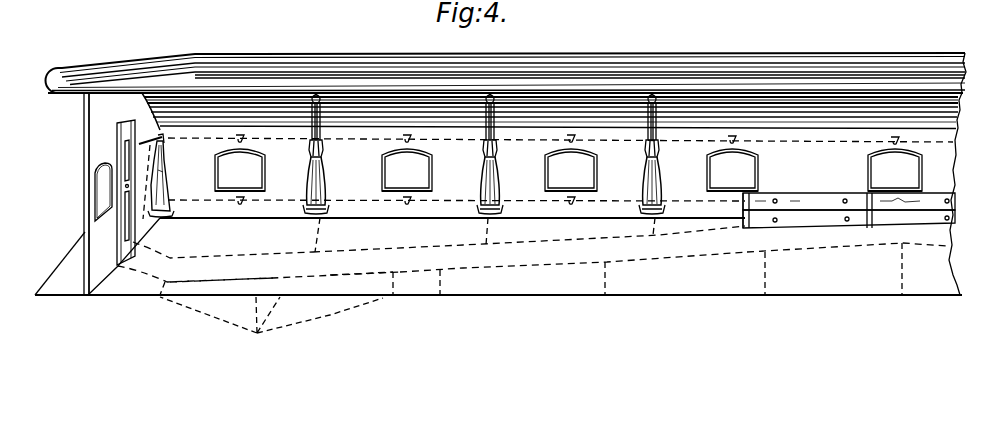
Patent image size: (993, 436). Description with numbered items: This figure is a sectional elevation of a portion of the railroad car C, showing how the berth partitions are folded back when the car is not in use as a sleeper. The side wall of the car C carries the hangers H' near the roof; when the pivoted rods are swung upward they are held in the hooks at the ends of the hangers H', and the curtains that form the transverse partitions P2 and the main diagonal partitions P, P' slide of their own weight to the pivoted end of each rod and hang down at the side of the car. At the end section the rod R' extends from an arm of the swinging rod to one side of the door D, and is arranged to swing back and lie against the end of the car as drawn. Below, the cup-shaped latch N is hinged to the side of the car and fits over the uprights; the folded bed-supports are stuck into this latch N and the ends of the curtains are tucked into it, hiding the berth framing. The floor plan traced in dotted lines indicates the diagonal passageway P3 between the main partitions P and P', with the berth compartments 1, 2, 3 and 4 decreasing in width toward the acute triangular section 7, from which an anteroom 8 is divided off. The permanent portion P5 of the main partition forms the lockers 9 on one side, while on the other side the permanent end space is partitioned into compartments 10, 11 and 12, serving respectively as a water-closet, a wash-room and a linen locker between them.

The car C is at (516, 194).
The door D is at (117, 123).
The rod R' is at (156, 171).
The hangers H' is at (497, 90).
The cup-shaped latch N is at (360, 204).
The lockers 9 is at (811, 191).
The permanent portion of main partition P5 is at (849, 222).
The main diagonal partition P is at (529, 242).
The main diagonal partition P' is at (573, 263).
The transverse partitions P2 is at (540, 262).
The longitudinal passageway P3 is at (262, 268).
The compartment 1 is at (545, 256).
The compartment 2 is at (537, 256).
The compartment 3 is at (547, 256).
The compartment 4 is at (918, 269).
The section 7 is at (456, 293).
The anteroom 8 is at (541, 258).
The compartment 10 is at (141, 285).
The compartment 11 is at (359, 284).
The compartment 12 is at (221, 287).